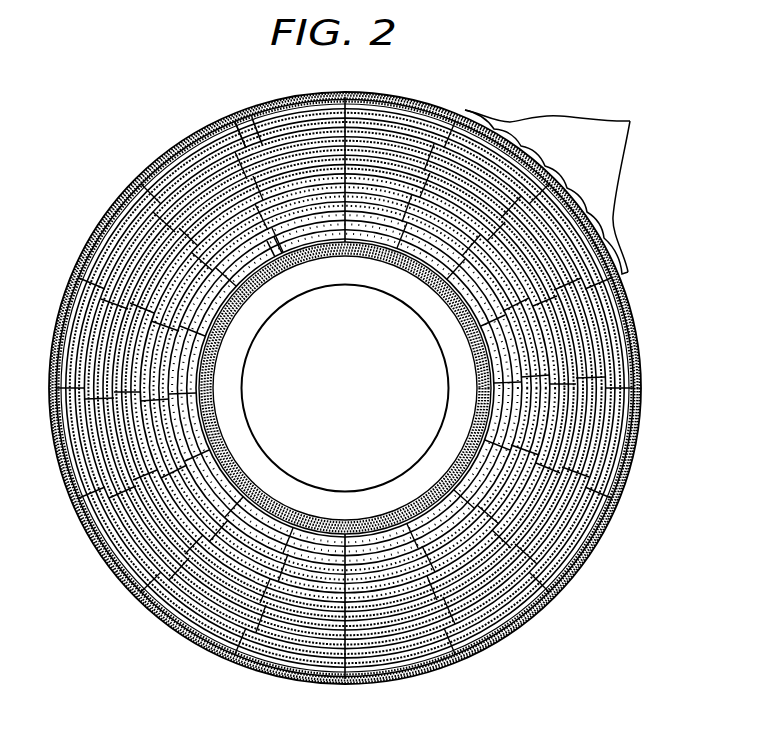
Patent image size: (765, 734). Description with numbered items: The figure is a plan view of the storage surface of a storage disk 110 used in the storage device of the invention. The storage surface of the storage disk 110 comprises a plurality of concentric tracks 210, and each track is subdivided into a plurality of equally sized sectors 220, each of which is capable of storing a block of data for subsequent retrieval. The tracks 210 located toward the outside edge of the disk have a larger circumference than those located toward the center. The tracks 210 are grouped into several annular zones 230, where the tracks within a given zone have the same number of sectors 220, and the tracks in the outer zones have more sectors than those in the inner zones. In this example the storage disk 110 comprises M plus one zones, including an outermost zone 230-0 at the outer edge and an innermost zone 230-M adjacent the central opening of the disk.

The storage disk 110 is at (379, 374).
The concentric tracks 210 is at (547, 605).
The sectors 220 is at (566, 189).
The annular zones 230 is at (562, 430).
The outermost zone 230-0 is at (243, 115).
The innermost zone 230-M is at (279, 259).